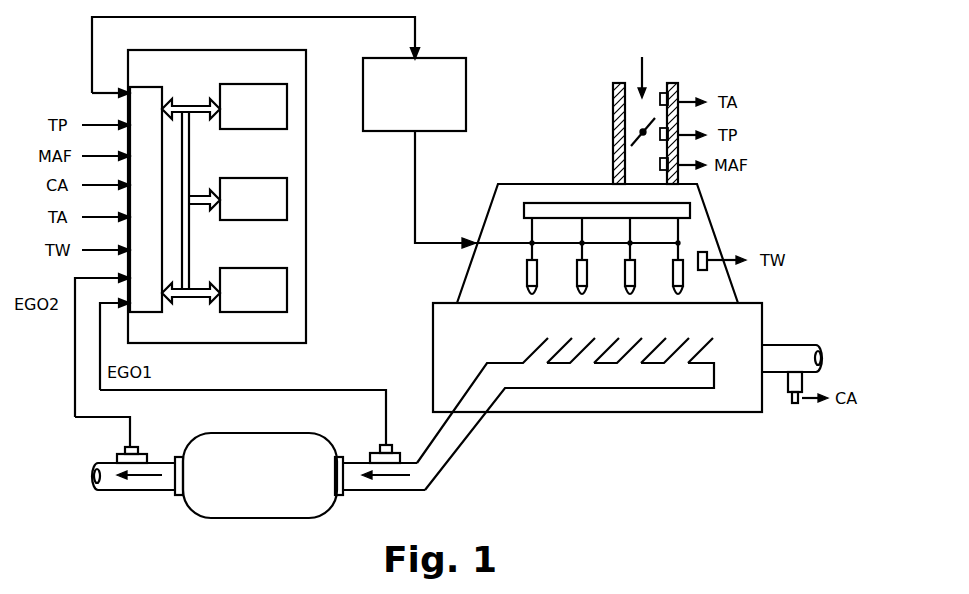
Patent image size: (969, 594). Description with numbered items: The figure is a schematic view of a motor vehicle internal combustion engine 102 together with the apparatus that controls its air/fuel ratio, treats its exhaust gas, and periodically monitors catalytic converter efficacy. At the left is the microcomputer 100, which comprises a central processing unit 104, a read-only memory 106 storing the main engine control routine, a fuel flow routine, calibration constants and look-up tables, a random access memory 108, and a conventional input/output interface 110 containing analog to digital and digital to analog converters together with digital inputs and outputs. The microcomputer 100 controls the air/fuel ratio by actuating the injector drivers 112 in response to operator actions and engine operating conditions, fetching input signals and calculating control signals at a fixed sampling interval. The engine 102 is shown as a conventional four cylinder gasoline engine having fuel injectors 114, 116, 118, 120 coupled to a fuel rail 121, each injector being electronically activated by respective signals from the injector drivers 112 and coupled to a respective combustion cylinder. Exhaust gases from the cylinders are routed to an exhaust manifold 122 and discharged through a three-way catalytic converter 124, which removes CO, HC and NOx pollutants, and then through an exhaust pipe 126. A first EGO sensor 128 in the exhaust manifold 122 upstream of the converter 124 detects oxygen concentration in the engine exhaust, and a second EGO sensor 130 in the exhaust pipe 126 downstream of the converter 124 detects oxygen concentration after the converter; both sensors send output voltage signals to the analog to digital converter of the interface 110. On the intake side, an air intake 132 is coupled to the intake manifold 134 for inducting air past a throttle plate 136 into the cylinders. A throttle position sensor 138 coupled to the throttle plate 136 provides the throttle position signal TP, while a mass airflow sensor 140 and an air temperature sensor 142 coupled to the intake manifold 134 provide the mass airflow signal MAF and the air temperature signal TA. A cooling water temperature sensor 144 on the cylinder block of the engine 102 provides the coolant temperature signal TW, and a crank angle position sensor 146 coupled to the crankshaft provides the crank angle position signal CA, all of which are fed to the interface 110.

The microcomputer 100 is at (306, 318).
The internal combustion engine 102 is at (592, 413).
The central processing unit (CPU) 104 is at (290, 98).
The read-only memory (ROM) 106 is at (290, 192).
The random access memory (RAM) 108 is at (290, 282).
The input/output (I/O) interface 110 is at (138, 87).
The injector drivers 112 is at (458, 61).
The fuel injector 114 is at (527, 292).
The fuel injector 116 is at (577, 292).
The fuel injector 118 is at (625, 292).
The fuel injector 120 is at (672, 292).
The fuel rail 121 is at (542, 203).
The exhaust manifold 122 is at (475, 383).
The three-way catalytic converter 124 is at (300, 475).
The exhaust pipe 126 is at (140, 491).
The first EGO sensor (EGO1) 128 is at (381, 449).
The second EGO sensor (EGO2) 130 is at (123, 451).
The air intake 132 is at (628, 90).
The intake manifold 134 is at (494, 196).
The throttle plate 136 is at (614, 134).
The throttle position sensor 138 is at (676, 156).
The mass airflow sensor 140 is at (678, 181).
The air temperature sensor 142 is at (663, 88).
The cooling water temperature sensor 144 is at (702, 272).
The crank angle position sensor 146 is at (776, 385).